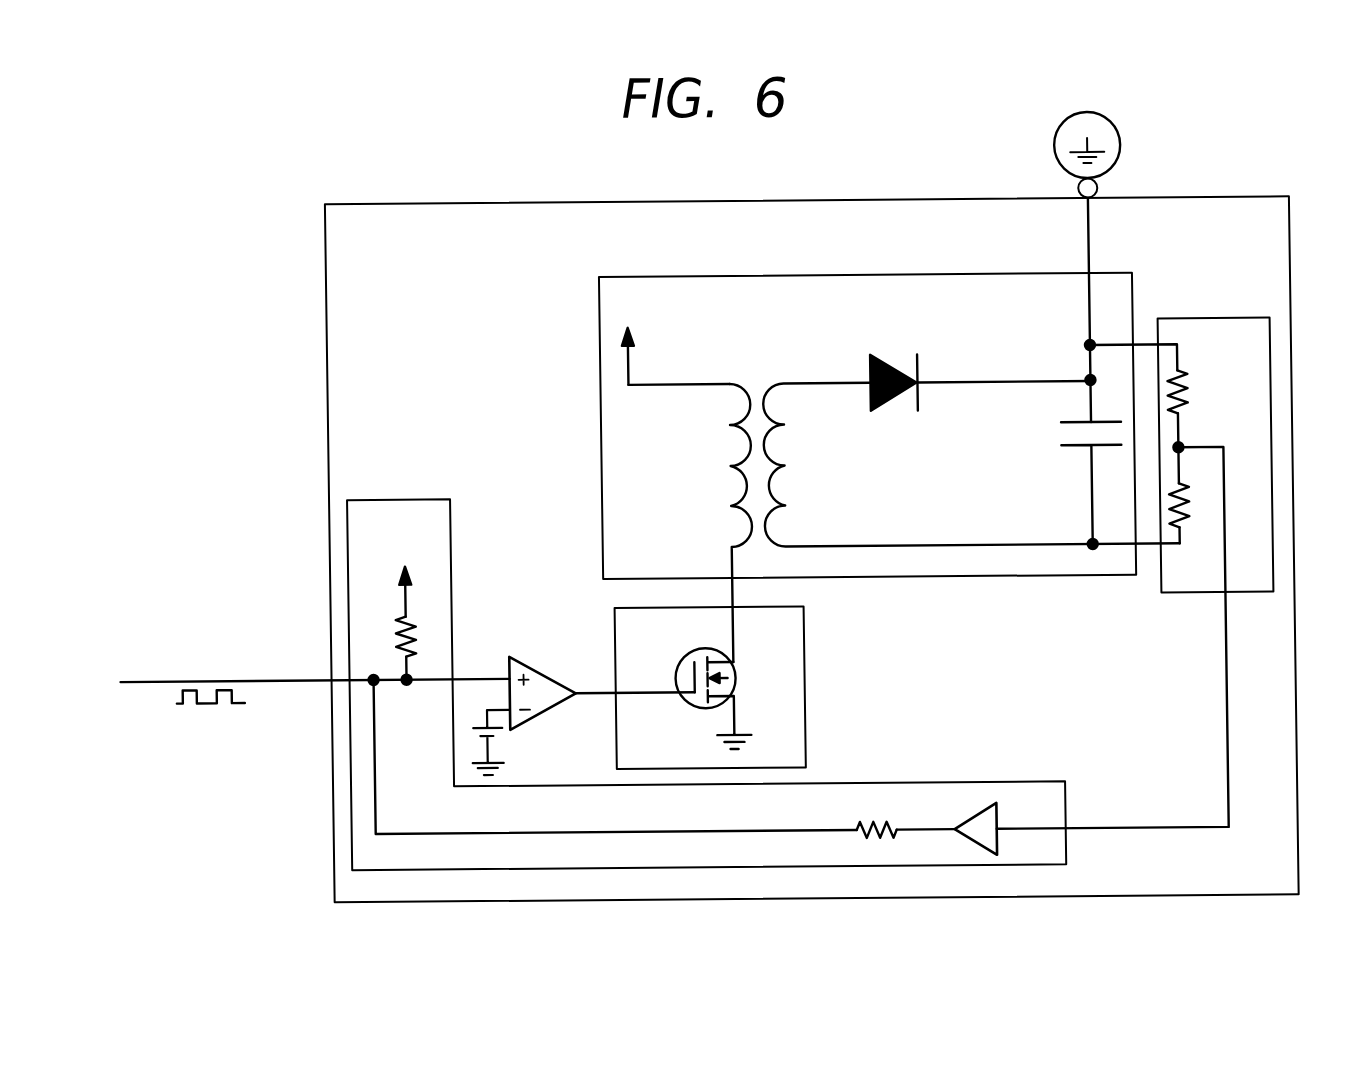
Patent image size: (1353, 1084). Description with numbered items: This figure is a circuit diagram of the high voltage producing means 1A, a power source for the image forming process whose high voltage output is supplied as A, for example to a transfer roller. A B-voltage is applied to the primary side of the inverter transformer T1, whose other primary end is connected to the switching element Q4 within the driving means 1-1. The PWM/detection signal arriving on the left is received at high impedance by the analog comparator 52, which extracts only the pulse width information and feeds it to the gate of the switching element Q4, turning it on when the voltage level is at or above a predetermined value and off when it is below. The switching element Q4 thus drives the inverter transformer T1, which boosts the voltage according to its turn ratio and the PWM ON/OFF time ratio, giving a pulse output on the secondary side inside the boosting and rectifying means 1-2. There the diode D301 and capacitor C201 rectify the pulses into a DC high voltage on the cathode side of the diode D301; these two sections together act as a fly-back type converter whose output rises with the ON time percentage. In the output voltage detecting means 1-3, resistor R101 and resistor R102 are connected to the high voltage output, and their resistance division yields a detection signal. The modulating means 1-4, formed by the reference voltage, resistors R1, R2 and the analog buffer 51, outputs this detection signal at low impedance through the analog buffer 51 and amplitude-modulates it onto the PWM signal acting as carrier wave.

The high voltage producing means 1A is at (370, 209).
The driving means 1-1 is at (796, 647).
The boosting and rectifying means 1-2 is at (664, 282).
The output voltage detecting means 1-3 is at (1209, 328).
The modulating means 1-4 is at (1014, 790).
The analog buffer 51 is at (958, 822).
The analog comparator 52 is at (531, 677).
The high voltage output A is at (1087, 237).
The inverter transformer T1 is at (762, 386).
The diode D301 is at (892, 373).
The capacitor C201 is at (1051, 445).
The resistor R101 is at (1180, 385).
The resistor R102 is at (1178, 530).
The switching element Q4 is at (676, 660).
The resistor R1 is at (846, 827).
The resistor R2 is at (387, 636).